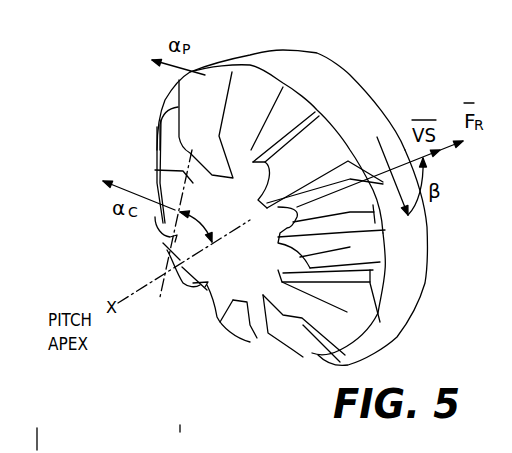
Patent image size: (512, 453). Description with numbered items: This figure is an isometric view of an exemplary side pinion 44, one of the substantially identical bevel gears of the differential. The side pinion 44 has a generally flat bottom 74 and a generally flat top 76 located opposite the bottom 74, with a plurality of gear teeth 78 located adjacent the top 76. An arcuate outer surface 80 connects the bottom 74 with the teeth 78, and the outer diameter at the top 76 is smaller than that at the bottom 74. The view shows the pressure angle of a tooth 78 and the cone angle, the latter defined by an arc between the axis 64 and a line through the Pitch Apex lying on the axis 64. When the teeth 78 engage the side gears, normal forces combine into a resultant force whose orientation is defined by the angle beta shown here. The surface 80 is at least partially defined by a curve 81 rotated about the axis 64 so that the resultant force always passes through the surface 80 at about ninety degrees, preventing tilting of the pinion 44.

The side pinion 44 is at (413, 70).
The axis 64 is at (132, 293).
The bottom 74 is at (428, 227).
The top 76 is at (230, 278).
The gear teeth 78 is at (338, 294).
The arcuate outer surface 80 is at (313, 77).
The curve 81 is at (398, 230).